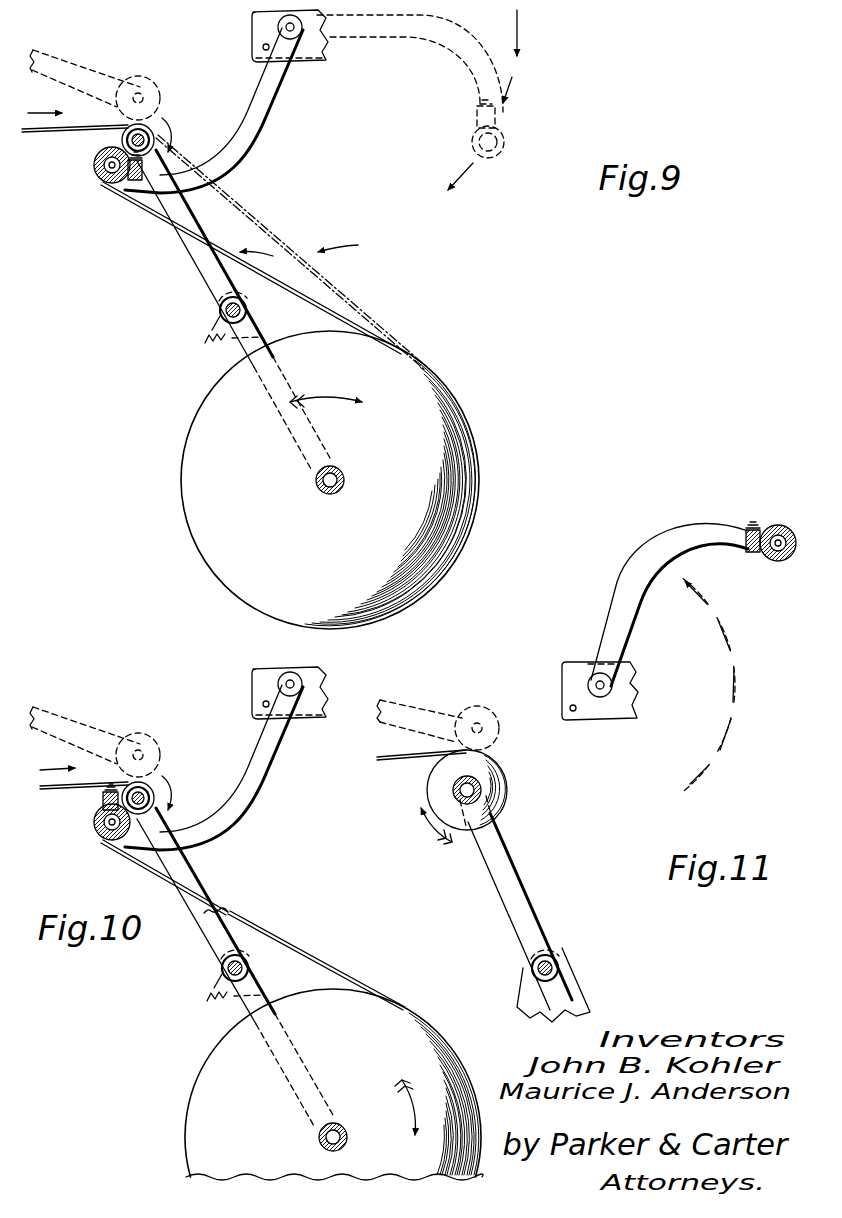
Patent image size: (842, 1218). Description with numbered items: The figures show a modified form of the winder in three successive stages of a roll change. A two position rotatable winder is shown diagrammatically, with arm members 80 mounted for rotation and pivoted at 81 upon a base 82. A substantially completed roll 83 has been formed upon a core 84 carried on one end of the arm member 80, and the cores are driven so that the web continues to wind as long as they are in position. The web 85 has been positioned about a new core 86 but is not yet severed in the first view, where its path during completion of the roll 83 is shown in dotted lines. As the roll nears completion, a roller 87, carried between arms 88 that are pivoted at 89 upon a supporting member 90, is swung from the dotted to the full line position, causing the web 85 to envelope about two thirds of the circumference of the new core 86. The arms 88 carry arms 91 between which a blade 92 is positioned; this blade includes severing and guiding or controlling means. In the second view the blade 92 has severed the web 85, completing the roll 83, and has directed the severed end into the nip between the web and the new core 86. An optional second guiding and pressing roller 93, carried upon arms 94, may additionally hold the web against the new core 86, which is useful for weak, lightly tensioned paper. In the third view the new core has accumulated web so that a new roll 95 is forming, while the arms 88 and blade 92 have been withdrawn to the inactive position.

In FIG. 9, the arm members 80 is at (196, 253).
In FIG. 10, the arm members 80 is at (200, 876).
In FIG. 11, the arm members 80 is at (532, 913).
In FIG. 9, the pivot 81 is at (220, 310).
In FIG. 10, the pivot 81 is at (222, 968).
In FIG. 11, the pivot 81 is at (557, 963).
In FIG. 9, the base 82 is at (205, 343).
In FIG. 10, the base 82 is at (207, 1000).
In FIG. 11, the base 82 is at (520, 992).
In FIG. 9, the substantially completed roll 83 is at (460, 410).
In FIG. 10, the substantially completed roll 83 is at (190, 1095).
In FIG. 9, the core 84 is at (344, 472).
In FIG. 10, the core 84 is at (348, 1137).
In FIG. 9, the web 85 is at (48, 132).
In FIG. 10, the web 85 is at (50, 789).
In FIG. 11, the web 85 is at (386, 763).
In FIG. 9, the new core 86 is at (160, 138).
In FIG. 10, the new core 86 is at (162, 798).
In FIG. 11, the new core 86 is at (476, 784).
In FIG. 9, the roller 87 is at (96, 178).
In FIG. 10, the roller 87 is at (100, 835).
In FIG. 11, the roller 87 is at (782, 527).
In FIG. 9, the arms 88 is at (255, 101).
In FIG. 10, the arms 88 is at (255, 744).
In FIG. 11, the arms 88 is at (678, 530).
In FIG. 9, the pivot 89 is at (296, 36).
In FIG. 10, the pivot 89 is at (296, 684).
In FIG. 11, the pivot 89 is at (605, 685).
In FIG. 9, the supporting member 90 is at (254, 35).
In FIG. 10, the supporting member 90 is at (254, 680).
In FIG. 11, the supporting member 90 is at (628, 713).
In FIG. 9, the arms 91 is at (126, 181).
In FIG. 10, the arms 91 is at (103, 806).
In FIG. 11, the arms 91 is at (752, 554).
In FIG. 9, the blade 92 is at (137, 183).
In FIG. 10, the blade 92 is at (111, 786).
In FIG. 11, the blade 92 is at (751, 522).
In FIG. 9, the second guiding and pressing roller 93 is at (148, 78).
In FIG. 10, the second guiding and pressing roller 93 is at (146, 733).
In FIG. 11, the second guiding and pressing roller 93 is at (486, 708).
In FIG. 9, the arms 94 is at (77, 66).
In FIG. 10, the arms 94 is at (69, 720).
In FIG. 11, the arms 94 is at (421, 710).
In FIG. 11, the new roll 95 is at (508, 790).